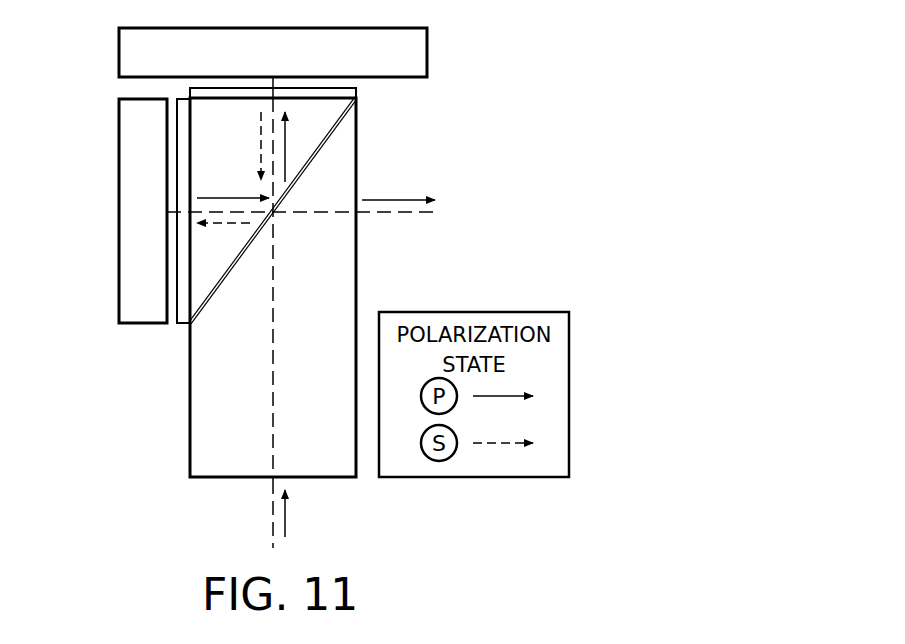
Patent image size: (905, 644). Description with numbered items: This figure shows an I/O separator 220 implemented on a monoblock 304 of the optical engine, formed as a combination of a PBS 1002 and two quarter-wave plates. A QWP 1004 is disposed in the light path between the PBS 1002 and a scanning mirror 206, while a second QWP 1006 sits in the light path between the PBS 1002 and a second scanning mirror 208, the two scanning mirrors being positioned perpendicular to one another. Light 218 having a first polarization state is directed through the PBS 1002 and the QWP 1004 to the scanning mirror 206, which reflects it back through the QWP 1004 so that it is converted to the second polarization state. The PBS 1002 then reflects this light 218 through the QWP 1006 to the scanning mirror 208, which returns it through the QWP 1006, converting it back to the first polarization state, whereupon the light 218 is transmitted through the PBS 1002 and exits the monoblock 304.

The scanning mirror 206 is at (428, 52).
The QWP 1004 is at (357, 91).
The monoblock 304 is at (189, 418).
The PBS 1002 is at (206, 302).
The second QWP 1006 is at (188, 324).
The scanning mirror 208 is at (118, 197).
The I/O separator 220 is at (370, 134).
The light 218 is at (272, 508).